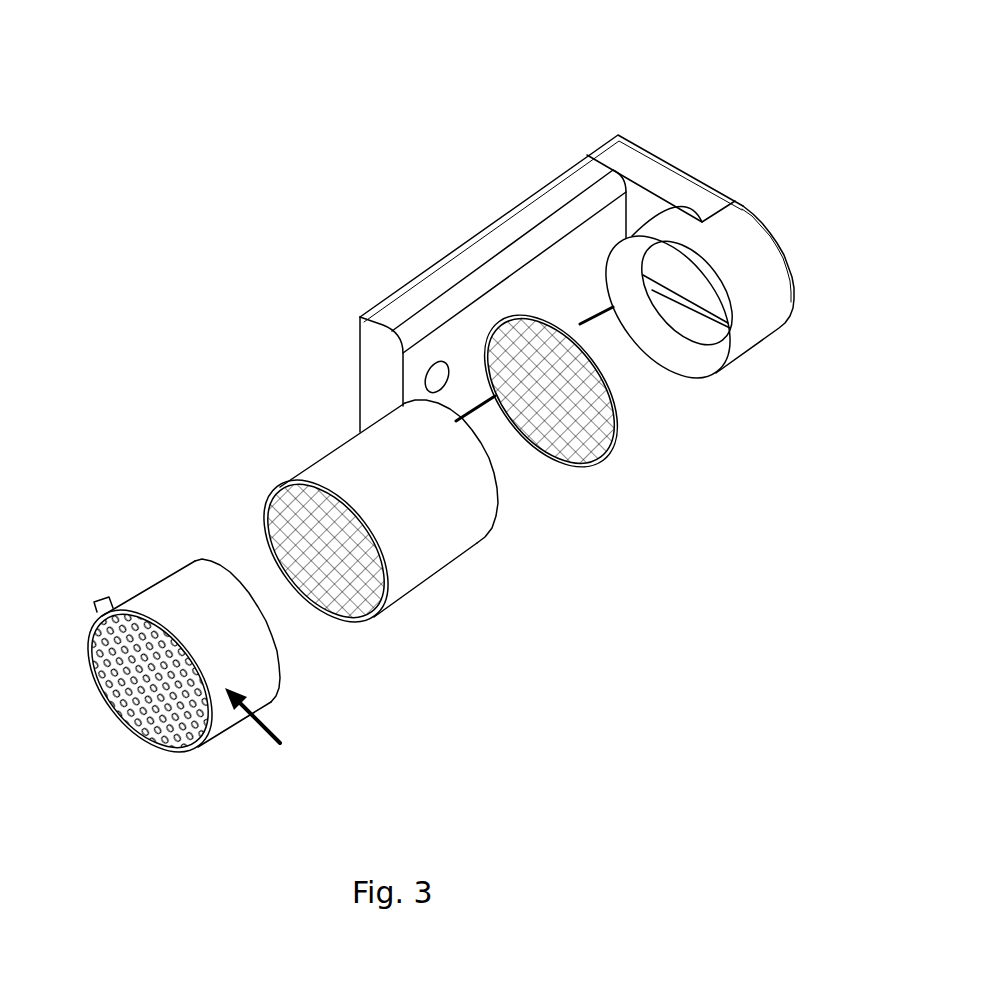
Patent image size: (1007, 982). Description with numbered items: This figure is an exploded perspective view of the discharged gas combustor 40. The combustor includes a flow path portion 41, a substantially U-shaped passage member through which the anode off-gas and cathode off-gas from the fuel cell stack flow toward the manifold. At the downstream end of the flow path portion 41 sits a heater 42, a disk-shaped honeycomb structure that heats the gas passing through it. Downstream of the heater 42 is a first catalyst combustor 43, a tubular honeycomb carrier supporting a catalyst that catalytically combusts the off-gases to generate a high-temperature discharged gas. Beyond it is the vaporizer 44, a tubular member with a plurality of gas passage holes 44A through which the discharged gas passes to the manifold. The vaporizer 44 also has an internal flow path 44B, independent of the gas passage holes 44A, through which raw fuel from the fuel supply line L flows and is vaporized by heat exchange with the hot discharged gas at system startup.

The discharged gas combustor 40 is at (577, 223).
The flow path portion 41 is at (486, 245).
The heater 42 is at (612, 442).
The first catalyst combustor 43 is at (478, 543).
The vaporizer 44 is at (202, 672).
The gas passage holes 44A is at (182, 743).
The internal flow path 44B is at (96, 606).
The fuel supply line L is at (263, 731).